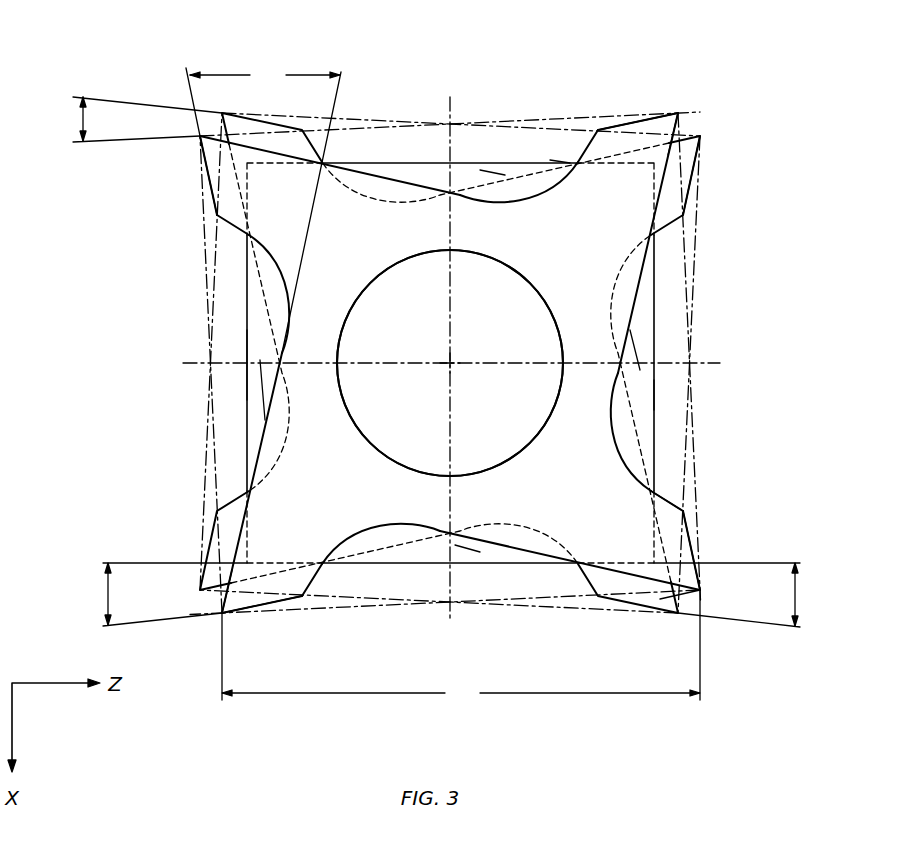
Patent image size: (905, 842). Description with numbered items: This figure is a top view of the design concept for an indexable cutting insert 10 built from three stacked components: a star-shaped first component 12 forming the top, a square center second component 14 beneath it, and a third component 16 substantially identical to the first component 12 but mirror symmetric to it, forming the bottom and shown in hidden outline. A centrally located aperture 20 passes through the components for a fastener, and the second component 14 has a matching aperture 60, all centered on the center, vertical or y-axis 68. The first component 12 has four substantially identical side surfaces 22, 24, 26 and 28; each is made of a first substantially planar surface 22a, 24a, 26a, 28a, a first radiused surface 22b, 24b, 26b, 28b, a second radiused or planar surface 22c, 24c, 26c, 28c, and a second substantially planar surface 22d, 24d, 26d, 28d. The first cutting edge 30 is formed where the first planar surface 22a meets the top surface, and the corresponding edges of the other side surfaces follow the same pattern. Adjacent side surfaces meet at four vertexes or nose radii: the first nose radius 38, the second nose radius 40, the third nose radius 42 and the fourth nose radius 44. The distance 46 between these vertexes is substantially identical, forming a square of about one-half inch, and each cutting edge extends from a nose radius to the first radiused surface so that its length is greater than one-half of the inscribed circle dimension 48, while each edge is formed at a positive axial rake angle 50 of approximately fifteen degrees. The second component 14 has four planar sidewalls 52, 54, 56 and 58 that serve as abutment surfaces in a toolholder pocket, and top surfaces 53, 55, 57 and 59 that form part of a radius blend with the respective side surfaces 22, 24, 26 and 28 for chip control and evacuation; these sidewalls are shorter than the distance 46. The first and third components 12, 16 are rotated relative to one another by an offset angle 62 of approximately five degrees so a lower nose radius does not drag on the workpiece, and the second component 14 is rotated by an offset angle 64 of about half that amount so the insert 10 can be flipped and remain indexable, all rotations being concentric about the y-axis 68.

The cutting insert 10 is at (808, 88).
The first component 12 is at (664, 485).
The second component 14 is at (666, 394).
The third component 16 is at (700, 185).
The aperture 20 is at (430, 253).
The side surface 22 is at (197, 374).
The first substantially planar surface 22a is at (243, 460).
The first radiused surface 22b is at (288, 280).
The second radiused or planar surface 22c is at (230, 226).
The second substantially planar surface 22d is at (207, 196).
The side surface 24 is at (461, 600).
The first substantially planar surface 24a is at (548, 556).
The first radiused surface 24b is at (382, 535).
The second radiused or planar surface 24c is at (323, 566).
The second substantially planar surface 24d is at (284, 600).
The side surface 26 is at (696, 351).
The first substantially planar surface 26a is at (640, 281).
The first radiused surface 26b is at (620, 455).
The second radiused or planar surface 26c is at (672, 503).
The second substantially planar surface 26d is at (688, 522).
The side surface 28 is at (439, 104).
The first substantially planar surface 28a is at (353, 170).
The first radiused surface 28b is at (530, 196).
The second radiused or planar surface 28c is at (590, 142).
The second substantially planar surface 28d is at (640, 121).
The first cutting edge 30 is at (263, 405).
The first vertex or nose radius 38 is at (199, 136).
The second vertex or nose radius 40 is at (222, 613).
The third vertex or nose radius 42 is at (702, 590).
The fourth vertex or nose radius 44 is at (679, 113).
The distance between vertexes 46 is at (461, 647).
The inscribed circle dimension 48 is at (559, 151).
The positive axial rake angle 50 is at (265, 208).
The planar sidewall 52 is at (246, 330).
The top surface of second component 53 is at (258, 370).
The planar sidewall 54 is at (430, 565).
The top surface of second component 55 is at (466, 550).
The planar sidewall 56 is at (655, 320).
The top surface of second component 57 is at (634, 350).
The planar sidewall 58 is at (476, 163).
The top surface of second component 59 is at (493, 172).
The aperture 60 is at (450, 269).
The offset angle 62 is at (127, 119).
The offset angle 64 is at (450, 595).
The center, vertical or y-axis 68 is at (456, 358).